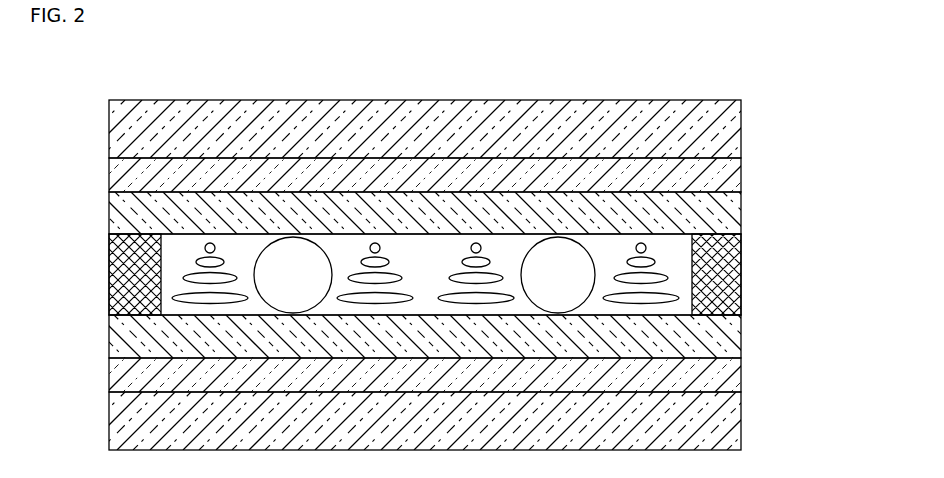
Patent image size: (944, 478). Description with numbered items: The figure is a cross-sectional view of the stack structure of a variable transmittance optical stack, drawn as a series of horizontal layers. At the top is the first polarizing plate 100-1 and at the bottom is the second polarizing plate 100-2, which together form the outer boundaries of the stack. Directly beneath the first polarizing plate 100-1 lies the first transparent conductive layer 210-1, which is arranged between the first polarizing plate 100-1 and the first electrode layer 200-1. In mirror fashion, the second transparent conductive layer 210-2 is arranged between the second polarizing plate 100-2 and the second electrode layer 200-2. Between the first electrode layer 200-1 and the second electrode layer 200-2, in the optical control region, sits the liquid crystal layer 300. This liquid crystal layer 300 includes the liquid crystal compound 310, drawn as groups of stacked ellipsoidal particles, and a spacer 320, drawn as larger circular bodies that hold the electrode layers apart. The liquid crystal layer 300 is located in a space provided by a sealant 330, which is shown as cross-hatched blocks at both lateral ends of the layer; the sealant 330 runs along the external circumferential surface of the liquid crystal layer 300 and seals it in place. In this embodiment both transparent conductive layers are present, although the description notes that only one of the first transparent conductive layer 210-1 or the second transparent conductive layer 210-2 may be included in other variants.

The first polarizing plate 100-1 is at (735, 128).
The first transparent conductive layer 210-1 is at (732, 175).
The first electrode layer 200-1 is at (735, 215).
The liquid crystal layer 300 is at (758, 234).
The sealant 330 is at (128, 236).
The spacer 320 is at (555, 248).
The liquid crystal compound 310 is at (638, 245).
The second electrode layer 200-2 is at (735, 330).
The second transparent conductive layer 210-2 is at (735, 368).
The second polarizing plate 100-2 is at (735, 418).